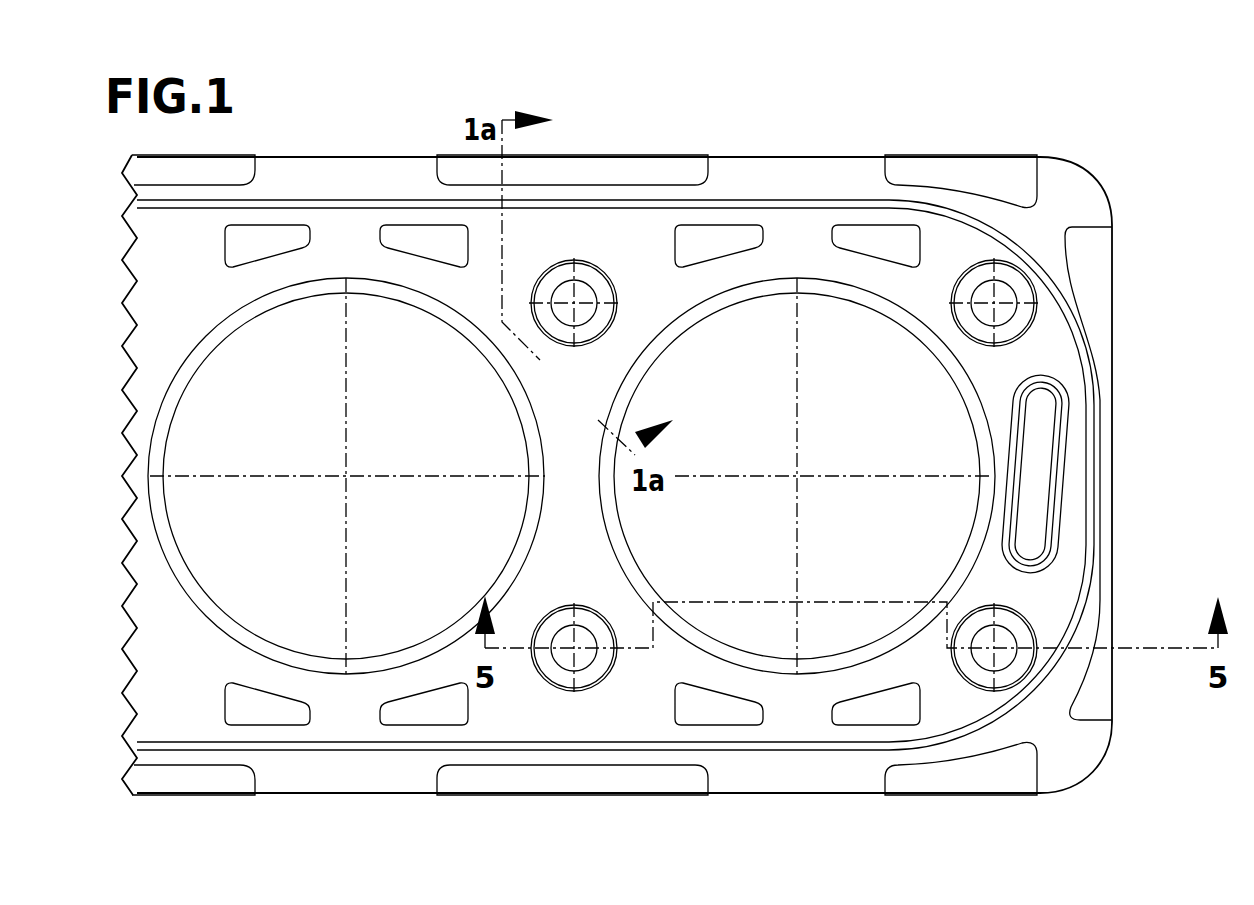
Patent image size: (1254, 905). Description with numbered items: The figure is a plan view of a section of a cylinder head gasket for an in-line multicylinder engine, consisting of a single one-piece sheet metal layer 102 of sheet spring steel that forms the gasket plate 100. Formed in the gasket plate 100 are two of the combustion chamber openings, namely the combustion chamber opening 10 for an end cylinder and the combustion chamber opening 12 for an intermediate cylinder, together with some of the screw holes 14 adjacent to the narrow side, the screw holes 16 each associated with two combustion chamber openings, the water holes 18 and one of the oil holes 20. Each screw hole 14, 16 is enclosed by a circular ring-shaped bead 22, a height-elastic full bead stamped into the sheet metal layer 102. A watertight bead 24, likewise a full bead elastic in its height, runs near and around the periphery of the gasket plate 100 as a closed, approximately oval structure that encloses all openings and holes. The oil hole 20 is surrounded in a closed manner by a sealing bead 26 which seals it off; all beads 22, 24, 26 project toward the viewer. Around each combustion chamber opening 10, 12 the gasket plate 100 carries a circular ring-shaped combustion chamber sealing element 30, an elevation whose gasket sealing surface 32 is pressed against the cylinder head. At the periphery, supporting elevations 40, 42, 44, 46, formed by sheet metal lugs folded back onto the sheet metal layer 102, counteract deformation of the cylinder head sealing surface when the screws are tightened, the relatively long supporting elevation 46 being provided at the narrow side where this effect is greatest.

The gasket plate 100 is at (870, 140).
The sheet metal layer 102 is at (148, 343).
The combustion chamber opening 10 is at (748, 527).
The combustion chamber opening 12 is at (299, 527).
The screw hole 14 is at (976, 299).
The screw hole 16 is at (578, 290).
The water hole 18 is at (224, 245).
The oil hole 20 is at (1049, 487).
The circular ring-shaped bead 22 is at (547, 270).
The watertight bead 24 is at (383, 200).
The sealing bead 26 is at (1064, 421).
The combustion chamber sealing element 30 is at (188, 611).
The gasket sealing surface 32 is at (488, 347).
The supporting elevation 40 is at (270, 174).
The supporting elevation 42 is at (724, 172).
The supporting elevation 44 is at (1049, 180).
The supporting elevation 46 is at (1086, 213).